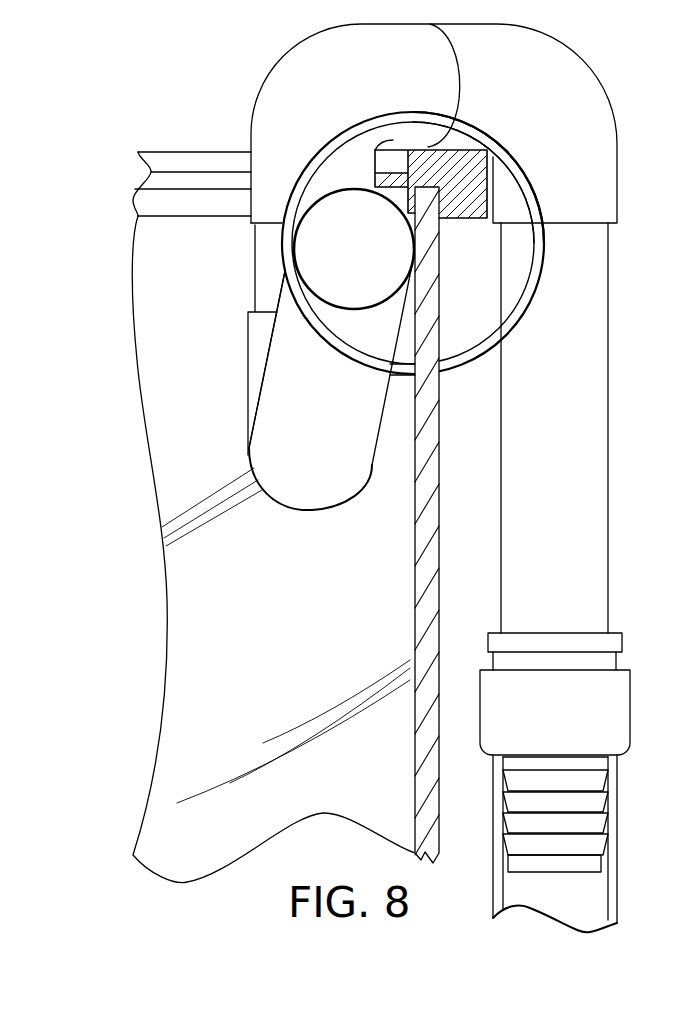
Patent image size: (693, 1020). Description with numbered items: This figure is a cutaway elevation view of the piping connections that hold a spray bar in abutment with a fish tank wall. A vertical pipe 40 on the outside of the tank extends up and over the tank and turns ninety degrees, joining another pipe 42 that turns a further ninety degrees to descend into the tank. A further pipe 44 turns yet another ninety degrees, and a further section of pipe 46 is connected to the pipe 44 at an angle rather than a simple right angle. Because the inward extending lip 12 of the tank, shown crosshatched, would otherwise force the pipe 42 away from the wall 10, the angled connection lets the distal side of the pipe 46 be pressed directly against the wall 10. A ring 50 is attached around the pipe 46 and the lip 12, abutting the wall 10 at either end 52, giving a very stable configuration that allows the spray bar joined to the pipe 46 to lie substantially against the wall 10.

The wall 10 is at (157, 305).
The lip 12 is at (188, 193).
The pipe 40 is at (598, 262).
The pipe 42 is at (282, 103).
The pipe 44 is at (260, 338).
The pipe 46 is at (285, 405).
The ring 50 is at (540, 210).
The end 52 is at (428, 375).